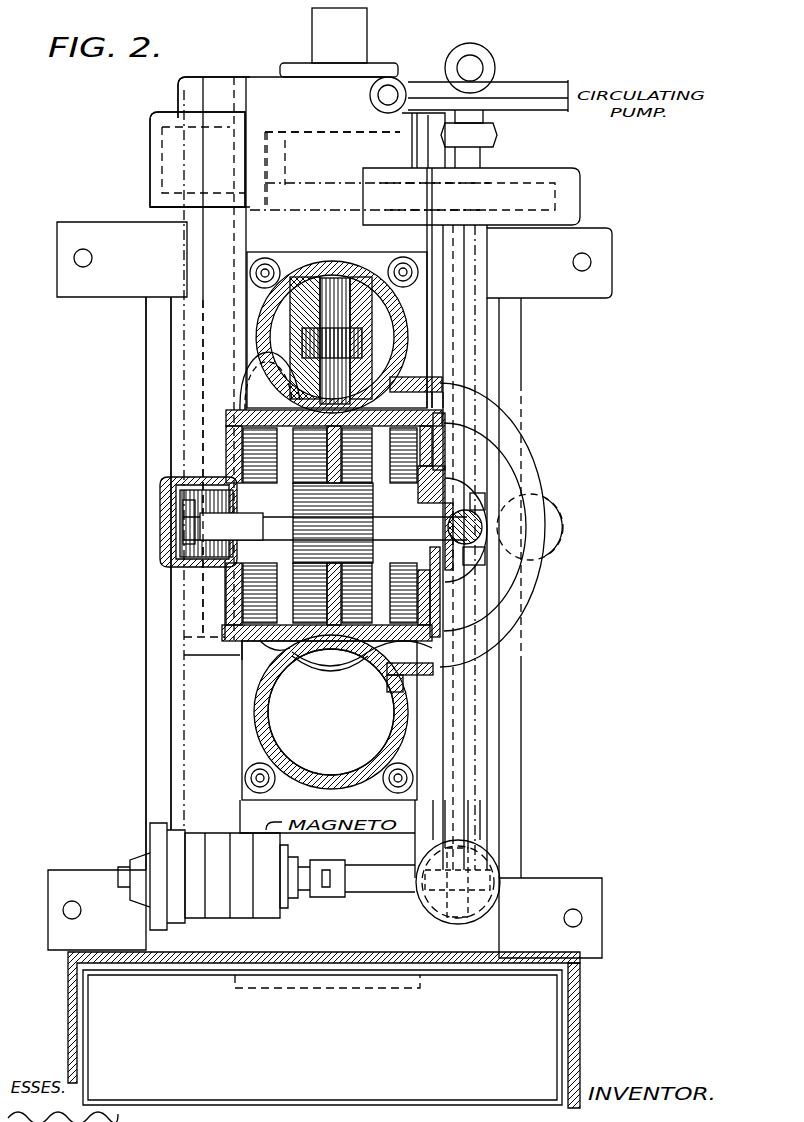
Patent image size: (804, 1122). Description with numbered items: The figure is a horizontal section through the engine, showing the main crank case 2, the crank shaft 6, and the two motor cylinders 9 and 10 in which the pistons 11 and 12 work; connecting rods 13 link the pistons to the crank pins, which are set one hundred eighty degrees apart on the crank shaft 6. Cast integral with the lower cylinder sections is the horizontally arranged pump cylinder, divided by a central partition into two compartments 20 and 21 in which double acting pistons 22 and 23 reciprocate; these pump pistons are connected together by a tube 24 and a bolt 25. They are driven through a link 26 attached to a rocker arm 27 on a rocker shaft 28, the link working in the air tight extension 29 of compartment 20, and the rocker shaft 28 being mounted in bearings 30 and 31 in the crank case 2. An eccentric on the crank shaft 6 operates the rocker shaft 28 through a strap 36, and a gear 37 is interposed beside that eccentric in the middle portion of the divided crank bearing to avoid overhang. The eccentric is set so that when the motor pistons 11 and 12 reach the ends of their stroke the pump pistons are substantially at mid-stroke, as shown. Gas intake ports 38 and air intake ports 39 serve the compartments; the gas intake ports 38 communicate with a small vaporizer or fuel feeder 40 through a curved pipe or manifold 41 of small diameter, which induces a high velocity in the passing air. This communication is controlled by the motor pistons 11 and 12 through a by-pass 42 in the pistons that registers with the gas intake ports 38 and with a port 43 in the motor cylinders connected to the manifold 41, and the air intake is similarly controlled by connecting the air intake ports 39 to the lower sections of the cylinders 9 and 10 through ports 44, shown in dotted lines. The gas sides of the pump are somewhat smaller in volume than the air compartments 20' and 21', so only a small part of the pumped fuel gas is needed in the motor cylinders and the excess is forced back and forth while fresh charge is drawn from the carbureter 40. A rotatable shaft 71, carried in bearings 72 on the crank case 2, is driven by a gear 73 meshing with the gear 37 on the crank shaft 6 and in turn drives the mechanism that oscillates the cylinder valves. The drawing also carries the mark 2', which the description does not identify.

The main crank case 2 is at (325, 590).
The bolts 2' is at (331, 511).
The crank shaft 6 is at (366, 45).
The motor cylinder 9 is at (258, 722).
The motor cylinder 10 is at (322, 278).
The piston 11 is at (275, 710).
The piston 12 is at (390, 326).
The connecting rods 13 is at (330, 525).
The compartment 20 is at (325, 525).
The air compartment 20' is at (183, 611).
The compartment 21 is at (354, 597).
The air compartment 21' is at (506, 561).
The double acting piston 22 is at (256, 578).
The double acting piston 23 is at (378, 493).
The tube 24 is at (342, 512).
The bolt 25 is at (357, 456).
The link 26 is at (258, 527).
The rocker arm 27 is at (210, 552).
The rocker shaft 28 is at (233, 77).
The air tight extension 29 is at (162, 510).
The bearing 30 is at (190, 605).
The bearing 31 is at (204, 345).
The strap 36 is at (331, 150).
The gear 37 is at (300, 196).
The gas intake ports 38 is at (282, 648).
The air intake ports 39 is at (245, 447).
The vaporizer or fuel feeder 40 is at (564, 520).
The curved pipe or manifold 41 is at (528, 590).
The by-pass 42 is at (347, 650).
The port 43 is at (420, 412).
The ports 44 is at (260, 370).
The rotatable shaft 71 is at (458, 380).
The bearings 72 is at (462, 356).
The gear 73 is at (553, 197).